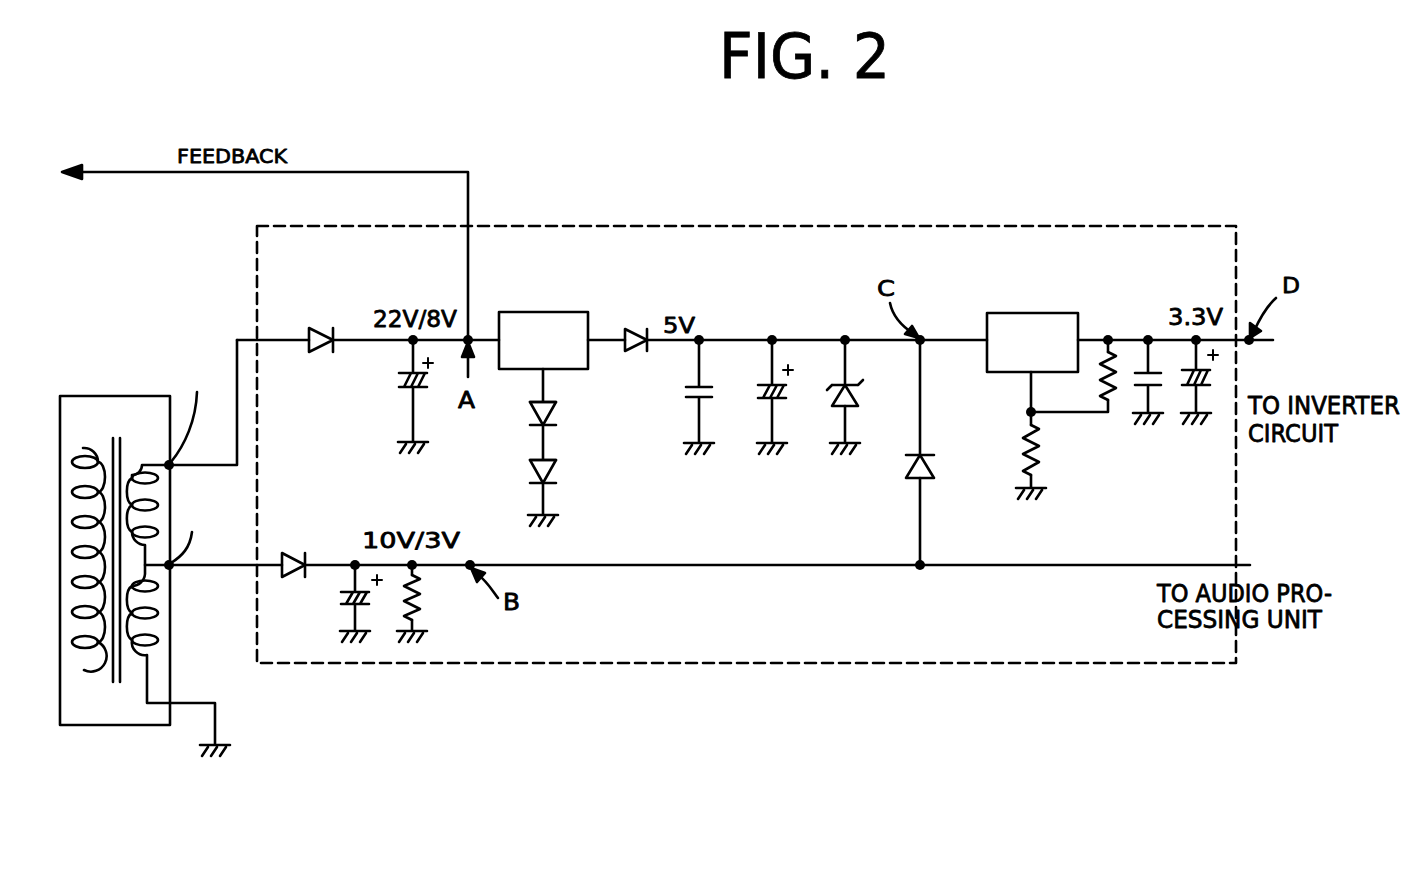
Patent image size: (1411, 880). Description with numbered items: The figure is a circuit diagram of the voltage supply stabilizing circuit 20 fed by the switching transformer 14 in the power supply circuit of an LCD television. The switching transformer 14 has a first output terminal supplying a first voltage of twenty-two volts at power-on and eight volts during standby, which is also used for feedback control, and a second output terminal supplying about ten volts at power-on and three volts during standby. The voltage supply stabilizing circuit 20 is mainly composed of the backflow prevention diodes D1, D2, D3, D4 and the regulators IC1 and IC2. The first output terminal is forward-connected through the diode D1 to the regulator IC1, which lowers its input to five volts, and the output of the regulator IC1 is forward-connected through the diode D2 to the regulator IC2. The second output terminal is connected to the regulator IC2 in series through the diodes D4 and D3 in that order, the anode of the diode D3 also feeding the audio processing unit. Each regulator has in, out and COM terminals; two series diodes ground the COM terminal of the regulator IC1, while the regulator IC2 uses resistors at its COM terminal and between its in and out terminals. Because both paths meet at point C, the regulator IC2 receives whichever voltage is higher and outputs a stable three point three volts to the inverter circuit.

The switching transformer 14 is at (114, 727).
The voltage supply stabilizing circuit 20 is at (708, 227).
The first diode D1 is at (325, 322).
The second diode D2 is at (637, 322).
The third diode D3 is at (942, 452).
The fourth diode D4 is at (295, 550).
The first regulator IC1 is at (543, 325).
The second regulator IC2 is at (1032, 328).